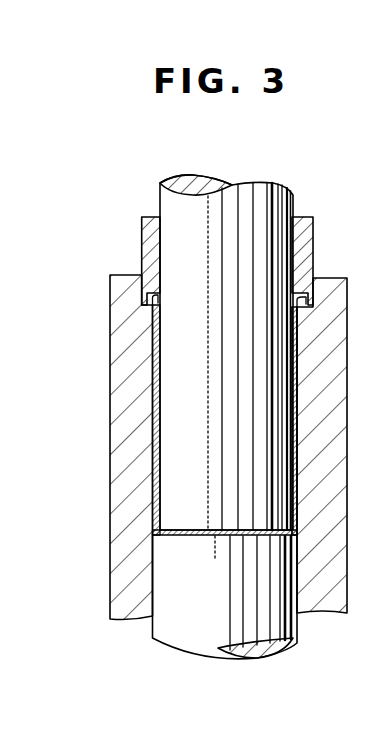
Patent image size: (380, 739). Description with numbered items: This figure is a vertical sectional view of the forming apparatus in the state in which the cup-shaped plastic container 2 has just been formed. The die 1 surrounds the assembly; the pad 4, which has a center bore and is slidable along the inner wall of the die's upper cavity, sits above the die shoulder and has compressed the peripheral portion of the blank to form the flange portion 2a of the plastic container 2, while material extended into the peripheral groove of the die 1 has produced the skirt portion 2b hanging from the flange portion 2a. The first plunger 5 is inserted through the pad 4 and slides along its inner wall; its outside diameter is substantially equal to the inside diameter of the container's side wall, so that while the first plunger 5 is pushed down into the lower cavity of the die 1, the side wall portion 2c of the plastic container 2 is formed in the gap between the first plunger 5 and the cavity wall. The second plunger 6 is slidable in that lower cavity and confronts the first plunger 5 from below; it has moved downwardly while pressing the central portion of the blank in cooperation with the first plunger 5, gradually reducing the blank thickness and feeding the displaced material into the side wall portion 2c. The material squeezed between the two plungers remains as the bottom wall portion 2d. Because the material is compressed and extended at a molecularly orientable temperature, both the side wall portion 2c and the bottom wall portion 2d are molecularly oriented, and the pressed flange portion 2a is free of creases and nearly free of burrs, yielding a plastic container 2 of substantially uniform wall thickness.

The die 1 is at (109, 479).
The plastic container 2 is at (297, 375).
The flange portion 2a is at (296, 297).
The skirt portion 2b is at (308, 310).
The side wall portion 2c is at (292, 421).
The bottom wall portion 2d is at (205, 536).
The pad 4 is at (306, 239).
The first plunger 5 is at (236, 192).
The second plunger 6 is at (188, 638).